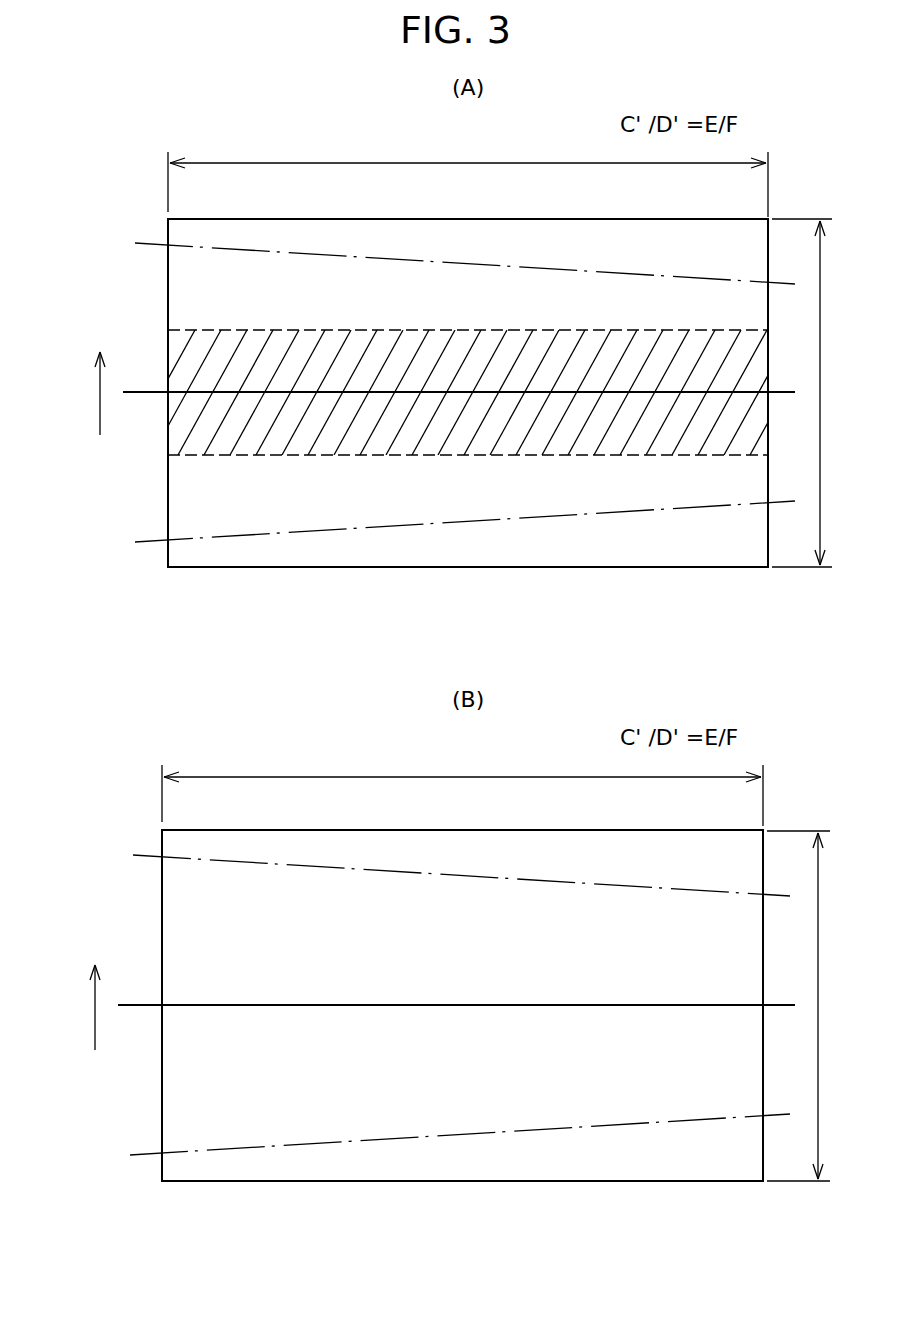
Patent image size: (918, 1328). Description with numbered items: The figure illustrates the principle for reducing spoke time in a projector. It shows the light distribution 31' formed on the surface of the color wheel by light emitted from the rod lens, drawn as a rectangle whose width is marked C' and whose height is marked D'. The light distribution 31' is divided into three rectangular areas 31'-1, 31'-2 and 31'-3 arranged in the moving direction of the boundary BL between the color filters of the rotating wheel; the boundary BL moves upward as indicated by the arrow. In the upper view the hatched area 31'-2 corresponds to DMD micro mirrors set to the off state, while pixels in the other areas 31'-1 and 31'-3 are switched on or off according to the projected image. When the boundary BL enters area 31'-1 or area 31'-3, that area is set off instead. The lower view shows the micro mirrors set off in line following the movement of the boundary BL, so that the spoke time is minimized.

The light distribution 31' is at (465, 727).
The area 31'-1 is at (468, 538).
The area 31'-2 is at (476, 390).
The area 31'-3 is at (468, 252).
The boundary BL is at (297, 262).
The plate width dimension C' is at (465, 480).
The plate height dimension D' is at (809, 700).